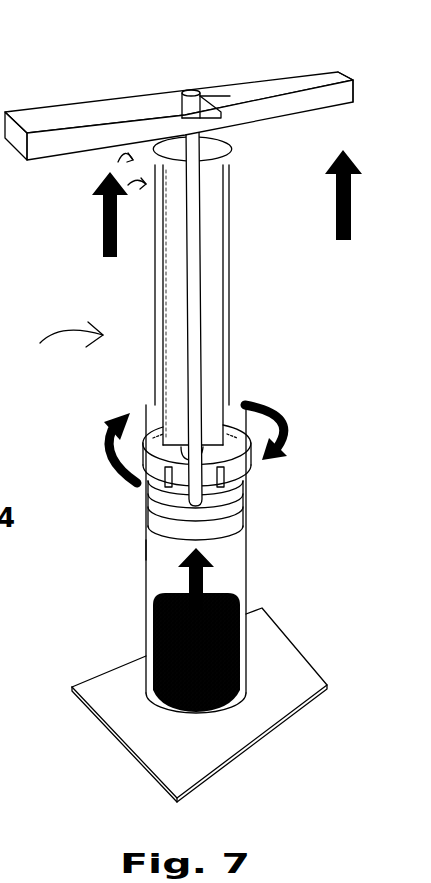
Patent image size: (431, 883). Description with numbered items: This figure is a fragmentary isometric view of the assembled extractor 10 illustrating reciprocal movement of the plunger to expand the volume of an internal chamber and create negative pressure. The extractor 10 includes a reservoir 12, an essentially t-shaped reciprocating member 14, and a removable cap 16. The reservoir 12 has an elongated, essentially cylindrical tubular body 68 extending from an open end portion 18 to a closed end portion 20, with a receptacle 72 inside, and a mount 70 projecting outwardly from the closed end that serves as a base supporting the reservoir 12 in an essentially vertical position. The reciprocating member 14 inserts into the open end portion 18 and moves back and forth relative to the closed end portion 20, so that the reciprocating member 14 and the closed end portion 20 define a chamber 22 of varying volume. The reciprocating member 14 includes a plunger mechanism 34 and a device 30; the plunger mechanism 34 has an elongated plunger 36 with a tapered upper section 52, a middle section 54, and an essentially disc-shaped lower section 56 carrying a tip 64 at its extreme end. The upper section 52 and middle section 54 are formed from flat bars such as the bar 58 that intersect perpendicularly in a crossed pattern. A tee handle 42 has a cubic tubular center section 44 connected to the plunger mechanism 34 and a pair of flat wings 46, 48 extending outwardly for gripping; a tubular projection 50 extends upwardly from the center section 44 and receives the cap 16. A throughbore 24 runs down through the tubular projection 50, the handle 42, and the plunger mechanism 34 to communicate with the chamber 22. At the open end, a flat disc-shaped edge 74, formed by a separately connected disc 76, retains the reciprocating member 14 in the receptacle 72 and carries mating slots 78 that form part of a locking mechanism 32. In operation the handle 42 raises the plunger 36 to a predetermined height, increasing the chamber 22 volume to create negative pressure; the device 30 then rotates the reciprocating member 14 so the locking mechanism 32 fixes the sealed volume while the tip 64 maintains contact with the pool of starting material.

The extractor 10 is at (57, 347).
The reservoir 12 is at (245, 609).
The reciprocating member 14 is at (100, 183).
The cap 16 is at (192, 92).
The open end portion 18 is at (197, 455).
The closed end portion 20 is at (210, 712).
The chamber 22 is at (160, 577).
The throughbore 24 is at (197, 223).
The device 30 is at (105, 161).
The locking mechanism 32 is at (225, 425).
The plunger mechanism 34 is at (170, 222).
The plunger 36 is at (147, 498).
The handle 42 is at (245, 87).
The center section 44 is at (223, 137).
The wing 46 is at (88, 112).
The wing 48 is at (315, 82).
The tubular projection 50 is at (193, 108).
The upper section 52 is at (207, 190).
The middle section 54 is at (223, 321).
The lower section 56 is at (248, 493).
The bar 58 is at (178, 282).
The tip 64 is at (228, 562).
The body 68 is at (245, 522).
The mount 70 is at (270, 708).
The receptacle 72 is at (155, 540).
The edge 74 is at (258, 396).
The disc 76 is at (147, 430).
The mating slots 78 is at (244, 462).